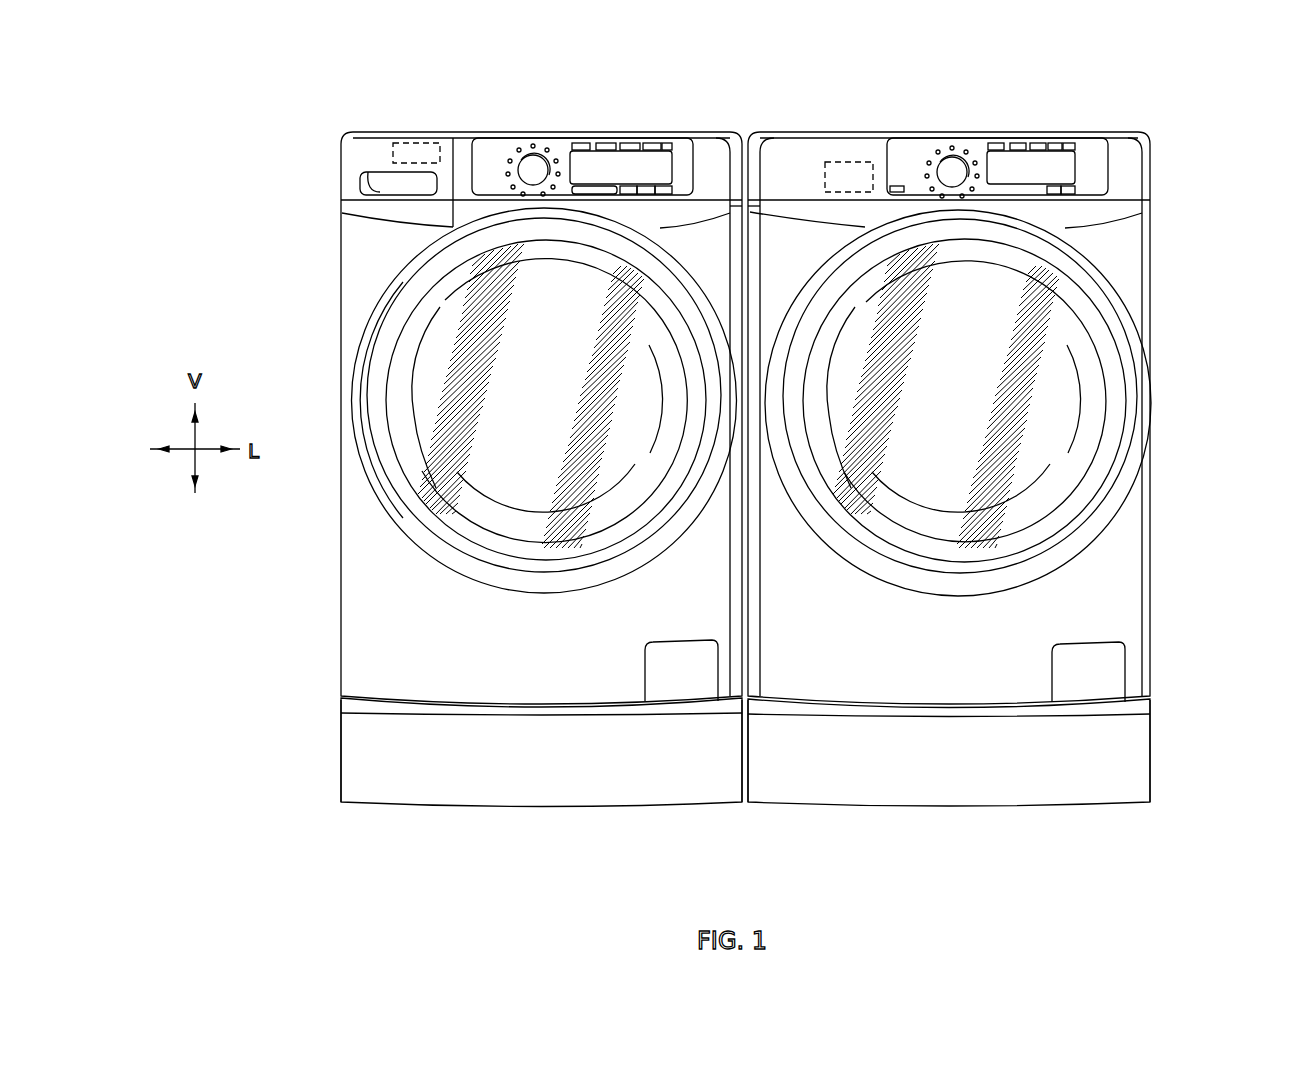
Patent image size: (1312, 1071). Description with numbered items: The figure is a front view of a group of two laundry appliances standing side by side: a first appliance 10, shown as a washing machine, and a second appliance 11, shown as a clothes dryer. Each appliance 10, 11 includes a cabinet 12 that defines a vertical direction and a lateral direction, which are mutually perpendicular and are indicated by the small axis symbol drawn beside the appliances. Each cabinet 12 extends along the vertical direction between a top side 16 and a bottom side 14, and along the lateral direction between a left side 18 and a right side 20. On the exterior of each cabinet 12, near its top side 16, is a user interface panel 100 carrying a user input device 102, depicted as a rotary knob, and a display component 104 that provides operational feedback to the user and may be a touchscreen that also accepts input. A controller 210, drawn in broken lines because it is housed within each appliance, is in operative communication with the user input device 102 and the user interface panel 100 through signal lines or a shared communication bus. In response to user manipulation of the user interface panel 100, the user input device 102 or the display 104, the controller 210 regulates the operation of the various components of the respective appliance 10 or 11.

The first appliance 10 is at (313, 127).
The second appliance 11 is at (1175, 158).
The cabinet 12 is at (368, 592).
The bottom side 14 is at (418, 813).
The top side 16 is at (385, 127).
The left side 18 is at (335, 742).
The right side 20 is at (738, 808).
The user interface panel 100 is at (565, 140).
The user input device 102 is at (528, 165).
The display component 104 is at (640, 160).
The controller 210 is at (420, 138).